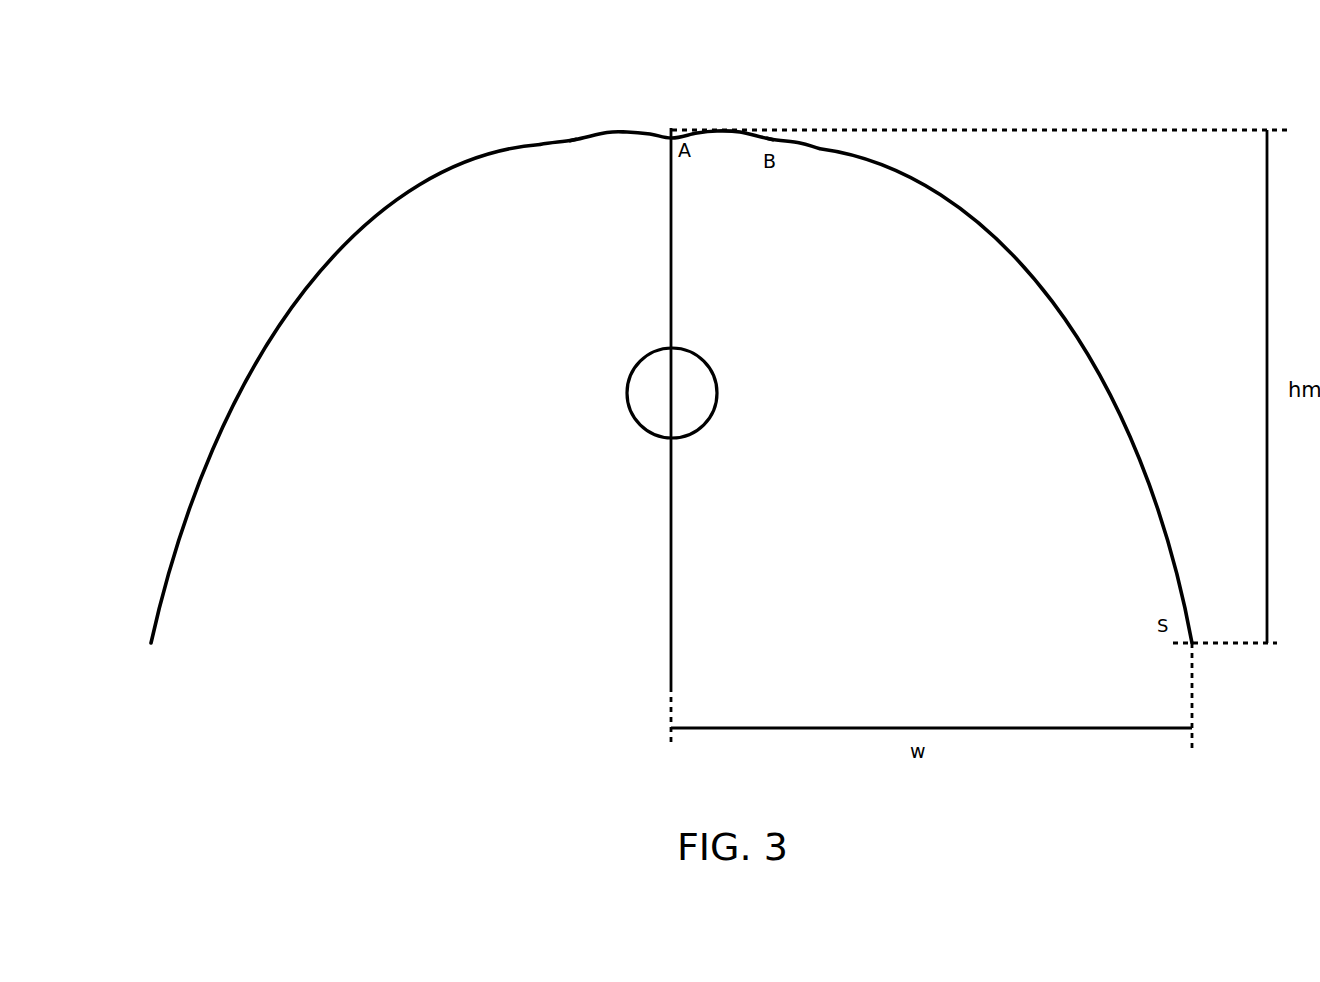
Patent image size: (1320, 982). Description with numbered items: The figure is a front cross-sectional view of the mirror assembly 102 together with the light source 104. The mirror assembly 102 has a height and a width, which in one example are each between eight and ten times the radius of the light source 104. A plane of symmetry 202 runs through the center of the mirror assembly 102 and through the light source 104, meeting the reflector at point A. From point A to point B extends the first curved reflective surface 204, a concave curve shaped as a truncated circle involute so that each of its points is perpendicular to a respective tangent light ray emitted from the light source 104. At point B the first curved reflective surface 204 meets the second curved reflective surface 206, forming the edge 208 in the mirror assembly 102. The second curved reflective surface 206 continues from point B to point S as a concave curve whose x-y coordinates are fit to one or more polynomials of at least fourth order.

The mirror assembly 102 is at (402, 193).
The light source 104 is at (716, 390).
The plane of symmetry 202 is at (671, 605).
The first curved reflective surface 204 is at (717, 131).
The second curved reflective surface 206 is at (1000, 238).
The edge 208 is at (573, 140).